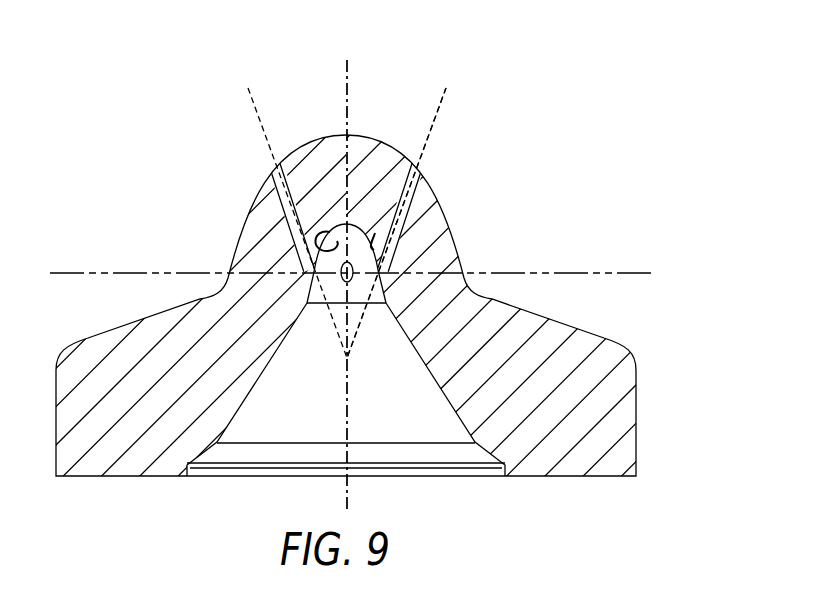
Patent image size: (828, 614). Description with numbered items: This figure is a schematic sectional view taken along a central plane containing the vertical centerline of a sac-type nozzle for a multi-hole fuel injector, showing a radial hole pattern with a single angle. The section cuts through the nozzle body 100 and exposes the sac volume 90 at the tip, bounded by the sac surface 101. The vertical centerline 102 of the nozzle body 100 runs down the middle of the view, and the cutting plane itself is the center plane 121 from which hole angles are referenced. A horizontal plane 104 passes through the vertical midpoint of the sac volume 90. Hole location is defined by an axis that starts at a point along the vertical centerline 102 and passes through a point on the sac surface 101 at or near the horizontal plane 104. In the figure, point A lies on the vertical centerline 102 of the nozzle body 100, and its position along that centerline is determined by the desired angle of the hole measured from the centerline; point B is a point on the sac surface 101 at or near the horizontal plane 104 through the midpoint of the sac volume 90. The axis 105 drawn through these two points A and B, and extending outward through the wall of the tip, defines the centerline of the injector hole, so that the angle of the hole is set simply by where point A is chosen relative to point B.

The nozzle body 100 is at (606, 341).
The sac volume 90 is at (360, 224).
The sac surface 101 is at (323, 231).
The vertical centerline 102 is at (347, 73).
The center plane 121 is at (347, 73).
The horizontal plane 104 is at (568, 273).
The axis 105 is at (441, 110).
The point A is at (397, 322).
The point B is at (375, 233).